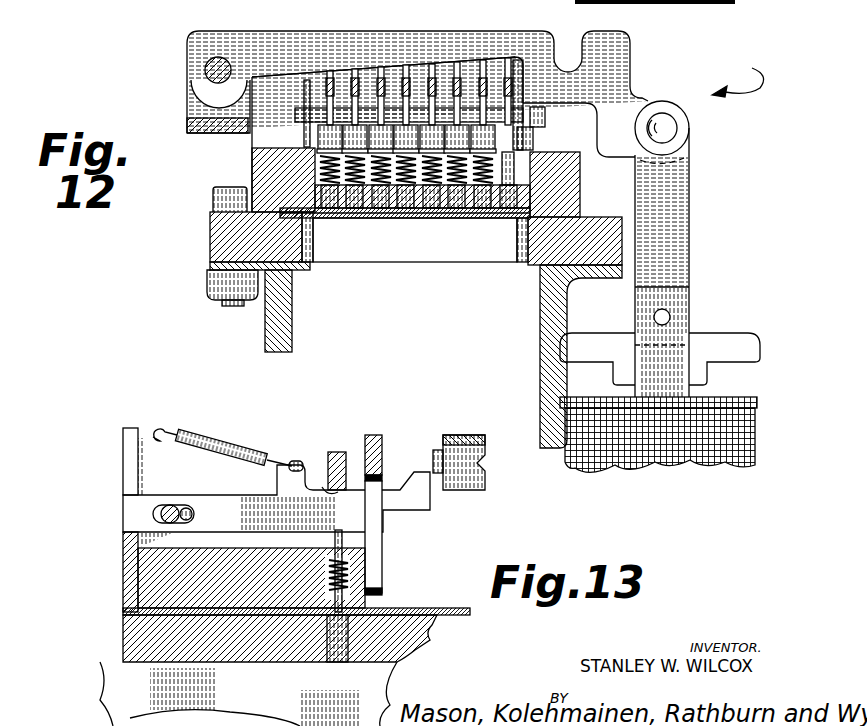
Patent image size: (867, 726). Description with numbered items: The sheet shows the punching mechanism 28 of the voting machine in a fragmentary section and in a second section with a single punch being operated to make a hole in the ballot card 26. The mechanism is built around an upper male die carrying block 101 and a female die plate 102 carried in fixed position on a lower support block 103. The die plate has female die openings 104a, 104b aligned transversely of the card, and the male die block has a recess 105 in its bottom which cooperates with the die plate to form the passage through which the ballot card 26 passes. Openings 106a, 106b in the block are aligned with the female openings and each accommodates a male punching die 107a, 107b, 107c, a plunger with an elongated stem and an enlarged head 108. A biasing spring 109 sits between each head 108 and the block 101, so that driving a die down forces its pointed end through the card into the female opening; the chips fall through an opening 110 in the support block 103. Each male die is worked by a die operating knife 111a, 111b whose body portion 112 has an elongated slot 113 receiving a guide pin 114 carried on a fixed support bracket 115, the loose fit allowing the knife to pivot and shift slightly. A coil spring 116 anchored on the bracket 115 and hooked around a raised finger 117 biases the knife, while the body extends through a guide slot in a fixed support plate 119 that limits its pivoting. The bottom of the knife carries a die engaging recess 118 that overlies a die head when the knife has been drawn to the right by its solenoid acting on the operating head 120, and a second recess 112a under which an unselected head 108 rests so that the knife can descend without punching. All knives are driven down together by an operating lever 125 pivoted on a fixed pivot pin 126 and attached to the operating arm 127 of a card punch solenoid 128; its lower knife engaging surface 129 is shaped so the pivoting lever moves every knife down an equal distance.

In FIG. 12, the punching mechanism 28 is at (738, 80).
In FIG. 13, the ballot card 26 is at (452, 612).
In FIG. 12, the upper male die carrying block 101 is at (255, 160).
In FIG. 13, the upper male die carrying block 101 is at (150, 566).
In FIG. 12, the female die plate 102 is at (600, 217).
In FIG. 13, the female die plate 102 is at (417, 604).
In FIG. 12, the lower support block 103 is at (220, 242).
In FIG. 13, the lower support block 103 is at (138, 637).
In FIG. 12, the female die opening 104a is at (330, 222).
In FIG. 12, the female die opening 104b is at (372, 212).
In FIG. 12, the recess 105 is at (572, 173).
In FIG. 13, the recess 105 is at (206, 602).
In FIG. 12, the opening 106a is at (320, 195).
In FIG. 12, the opening 106b is at (338, 212).
In FIG. 12, the male punching die 107a is at (327, 204).
In FIG. 12, the male punching die 107b is at (352, 213).
In FIG. 12, the male punching die 107c is at (388, 215).
In FIG. 12, the enlarged head 108 is at (330, 133).
In FIG. 13, the enlarged head 108 is at (385, 548).
In FIG. 12, the biasing spring 109 is at (318, 165).
In FIG. 13, the biasing spring 109 is at (327, 578).
In FIG. 12, the opening 110 is at (488, 257).
In FIG. 13, the opening 110 is at (328, 664).
In FIG. 12, the die operating knife 111a is at (324, 80).
In FIG. 12, the die operating knife 111b is at (350, 78).
In FIG. 13, the body portion 112 is at (245, 523).
In FIG. 13, the recess 112a is at (342, 522).
In FIG. 13, the elongated slot 113 is at (188, 508).
In FIG. 12, the guide pin 114 is at (296, 112).
In FIG. 13, the guide pin 114 is at (171, 505).
In FIG. 12, the fixed support bracket 115 is at (304, 90).
In FIG. 13, the fixed support bracket 115 is at (168, 505).
In FIG. 13, the coil spring 116 is at (210, 442).
In FIG. 13, the raised finger 117 is at (298, 460).
In FIG. 13, the die engaging recess 118 is at (340, 528).
In FIG. 13, the fixed support plate 119 is at (383, 446).
In FIG. 13, the operating head 120 is at (431, 488).
In FIG. 12, the operating lever 125 is at (497, 35).
In FIG. 13, the operating lever 125 is at (338, 452).
In FIG. 12, the fixed pivot pin 126 is at (212, 68).
In FIG. 12, the operating arm 127 is at (678, 195).
In FIG. 12, the card punch solenoid 128 is at (665, 457).
In FIG. 12, the lower knife engaging surface 129 is at (418, 68).
In FIG. 13, the lower knife engaging surface 129 is at (325, 486).